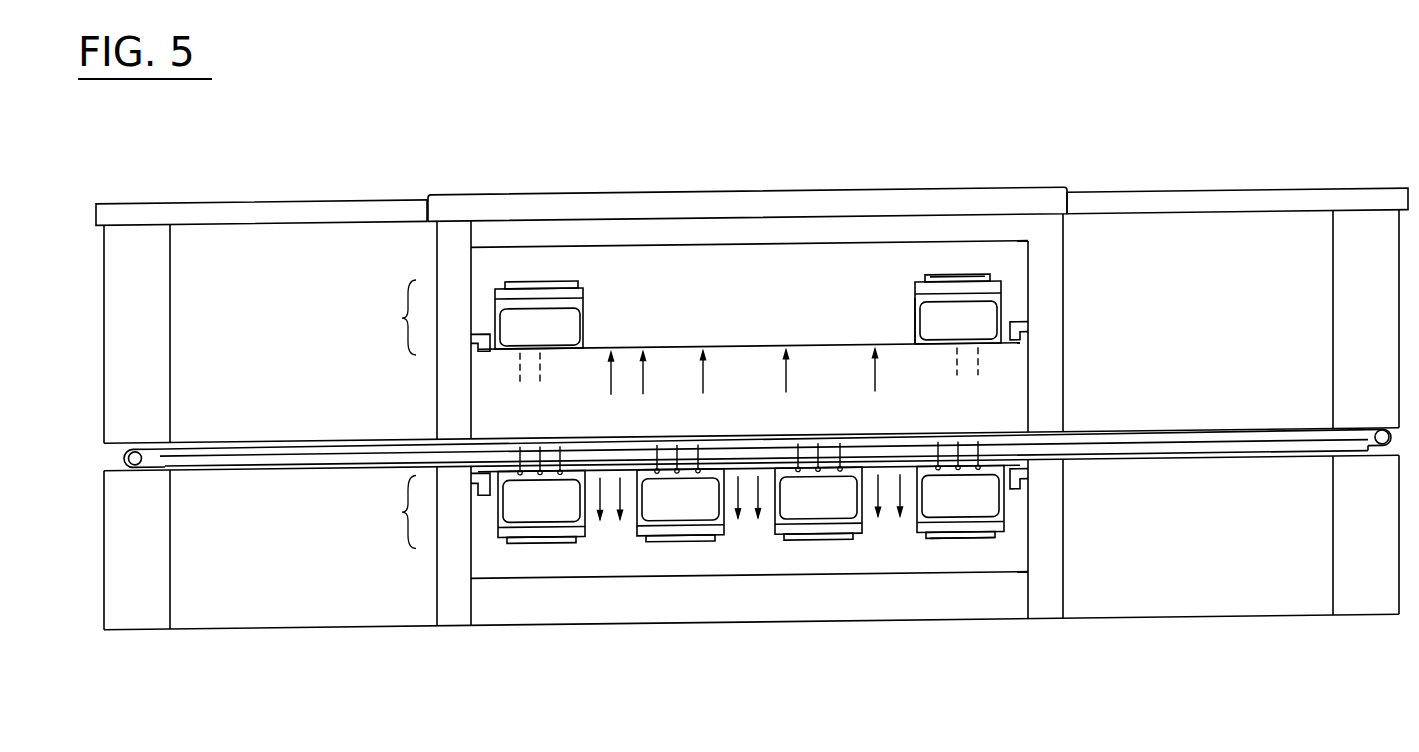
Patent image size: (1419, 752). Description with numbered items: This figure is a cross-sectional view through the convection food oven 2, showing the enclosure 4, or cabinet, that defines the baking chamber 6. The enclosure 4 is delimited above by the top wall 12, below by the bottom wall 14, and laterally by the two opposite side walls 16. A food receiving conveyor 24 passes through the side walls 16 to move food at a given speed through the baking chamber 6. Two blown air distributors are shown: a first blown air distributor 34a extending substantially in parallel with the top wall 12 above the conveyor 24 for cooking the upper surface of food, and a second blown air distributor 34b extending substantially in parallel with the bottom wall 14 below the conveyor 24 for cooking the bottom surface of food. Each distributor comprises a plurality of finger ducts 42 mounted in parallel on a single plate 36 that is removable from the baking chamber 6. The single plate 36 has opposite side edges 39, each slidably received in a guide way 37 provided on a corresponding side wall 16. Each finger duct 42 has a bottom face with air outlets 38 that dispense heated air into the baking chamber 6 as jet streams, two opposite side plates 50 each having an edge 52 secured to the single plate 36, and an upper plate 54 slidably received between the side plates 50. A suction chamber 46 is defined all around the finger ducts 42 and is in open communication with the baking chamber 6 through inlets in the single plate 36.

The convection food oven 2 is at (497, 698).
The enclosure 4 is at (801, 620).
The baking chamber 6 is at (745, 396).
The top wall 12 is at (935, 602).
The bottom wall 14 is at (704, 216).
The side walls 16 is at (435, 193).
The food receiving conveyor 24 is at (216, 436).
The first blown air distributor 34a is at (381, 513).
The second blown air distributor 34b is at (379, 318).
The single plate 36 is at (643, 358).
The guide way 37 is at (478, 330).
The air outlets 38 is at (512, 350).
The side edges 39 is at (478, 341).
The finger ducts 42 is at (592, 322).
The suction chamber 46 is at (754, 286).
The side plates 50 is at (918, 332).
The edge 52 is at (925, 350).
The upper plate 54 is at (942, 288).